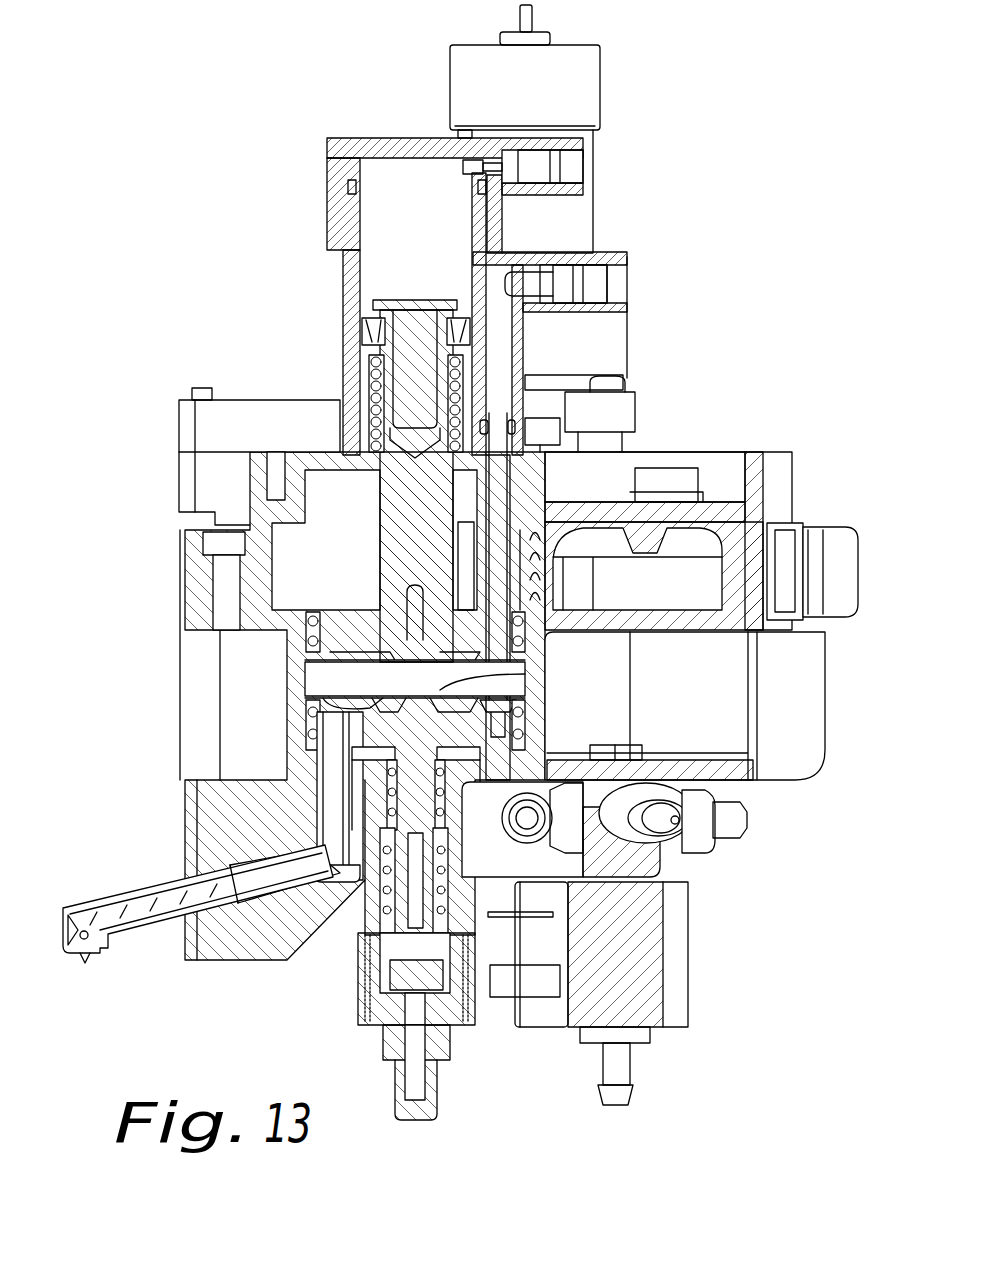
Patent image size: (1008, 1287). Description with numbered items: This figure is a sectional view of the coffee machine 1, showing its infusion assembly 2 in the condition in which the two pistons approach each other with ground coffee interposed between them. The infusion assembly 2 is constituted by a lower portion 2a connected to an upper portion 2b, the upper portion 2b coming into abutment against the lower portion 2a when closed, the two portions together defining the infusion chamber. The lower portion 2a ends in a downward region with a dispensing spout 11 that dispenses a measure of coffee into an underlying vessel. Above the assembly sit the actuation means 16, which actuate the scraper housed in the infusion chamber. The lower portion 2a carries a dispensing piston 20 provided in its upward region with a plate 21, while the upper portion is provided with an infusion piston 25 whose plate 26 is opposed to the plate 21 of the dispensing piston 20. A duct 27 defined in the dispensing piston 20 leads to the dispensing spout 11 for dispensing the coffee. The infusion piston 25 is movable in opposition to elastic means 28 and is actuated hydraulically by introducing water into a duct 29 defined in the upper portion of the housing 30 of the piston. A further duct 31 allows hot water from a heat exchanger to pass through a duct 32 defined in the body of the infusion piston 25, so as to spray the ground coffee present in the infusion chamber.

The machine 1 is at (208, 136).
The infusion assembly 2 is at (334, 754).
The lower portion 2a is at (188, 585).
The upper portion 2b is at (258, 485).
The dispensing spout 11 is at (132, 915).
The actuation means 16 is at (583, 90).
The dispensing piston 20 is at (360, 732).
The plate 21 is at (440, 690).
The infusion piston 25 is at (369, 481).
The plate 26 is at (335, 662).
The duct 27 is at (333, 820).
The elastic means 28 is at (372, 378).
The duct 29 is at (583, 168).
The housing 30 is at (347, 288).
The further duct 31 is at (598, 276).
The duct 32 is at (497, 452).